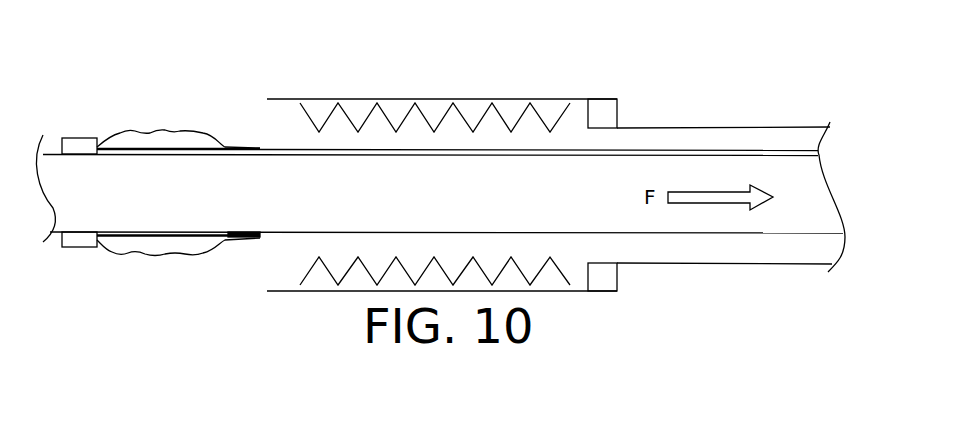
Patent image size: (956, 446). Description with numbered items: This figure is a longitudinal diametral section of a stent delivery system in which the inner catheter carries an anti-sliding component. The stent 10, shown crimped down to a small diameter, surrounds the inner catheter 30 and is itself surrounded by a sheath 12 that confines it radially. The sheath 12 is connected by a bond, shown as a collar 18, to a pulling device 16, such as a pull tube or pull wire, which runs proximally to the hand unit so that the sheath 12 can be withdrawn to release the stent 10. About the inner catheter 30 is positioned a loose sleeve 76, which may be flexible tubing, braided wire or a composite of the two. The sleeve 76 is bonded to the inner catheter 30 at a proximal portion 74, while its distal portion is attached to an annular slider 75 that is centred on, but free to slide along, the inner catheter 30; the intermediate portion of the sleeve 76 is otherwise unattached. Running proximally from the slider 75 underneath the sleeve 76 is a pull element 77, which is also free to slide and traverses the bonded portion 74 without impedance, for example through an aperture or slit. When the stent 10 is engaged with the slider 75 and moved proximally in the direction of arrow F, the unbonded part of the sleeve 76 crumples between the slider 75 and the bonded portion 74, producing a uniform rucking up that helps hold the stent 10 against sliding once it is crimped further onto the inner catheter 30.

The stent 10 is at (482, 115).
The sheath 12 is at (535, 99).
The pulling device 16 is at (753, 127).
The collar 18 is at (602, 99).
The inner catheter 30 is at (585, 157).
The proximal portion 74 is at (240, 148).
The annular slider 75 is at (79, 138).
The loose sleeve 76 is at (152, 132).
The pull element 77 is at (685, 152).